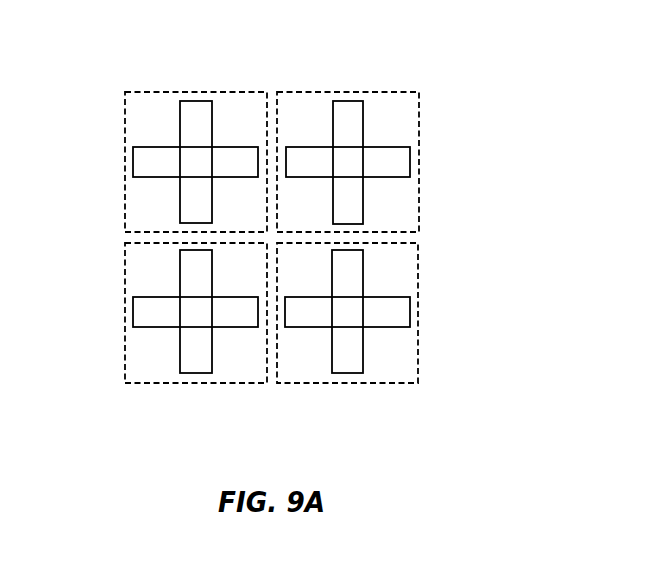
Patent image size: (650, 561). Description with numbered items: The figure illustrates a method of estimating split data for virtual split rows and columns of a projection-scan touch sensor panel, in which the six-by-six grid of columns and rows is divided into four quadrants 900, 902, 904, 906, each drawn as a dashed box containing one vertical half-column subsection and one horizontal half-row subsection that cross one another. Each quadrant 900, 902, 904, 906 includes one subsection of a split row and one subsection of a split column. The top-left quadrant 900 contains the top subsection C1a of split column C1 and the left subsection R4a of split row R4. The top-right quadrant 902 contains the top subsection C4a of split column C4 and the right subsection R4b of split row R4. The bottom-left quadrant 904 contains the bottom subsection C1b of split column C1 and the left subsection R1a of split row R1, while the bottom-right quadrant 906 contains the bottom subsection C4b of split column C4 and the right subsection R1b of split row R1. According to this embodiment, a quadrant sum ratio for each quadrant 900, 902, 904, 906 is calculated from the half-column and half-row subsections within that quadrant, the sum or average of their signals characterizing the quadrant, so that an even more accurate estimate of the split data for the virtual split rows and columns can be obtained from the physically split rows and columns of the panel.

The quadrant 900 is at (165, 92).
The quadrant 902 is at (382, 92).
The quadrant 904 is at (162, 383).
The quadrant 906 is at (378, 383).
The bottom subsection of split column C1 C1b is at (195, 101).
The bottom subsection of split column C4 C4b is at (348, 101).
The top subsection of split column C1 C1a is at (195, 373).
The top subsection of split column C4 C4a is at (348, 373).
The left subsection of split row R4 R4a is at (133, 163).
The right subsection of split row R4 R4b is at (410, 162).
The left subsection of split row R1 R1a is at (133, 312).
The right subsection of split row R1 R1b is at (410, 312).